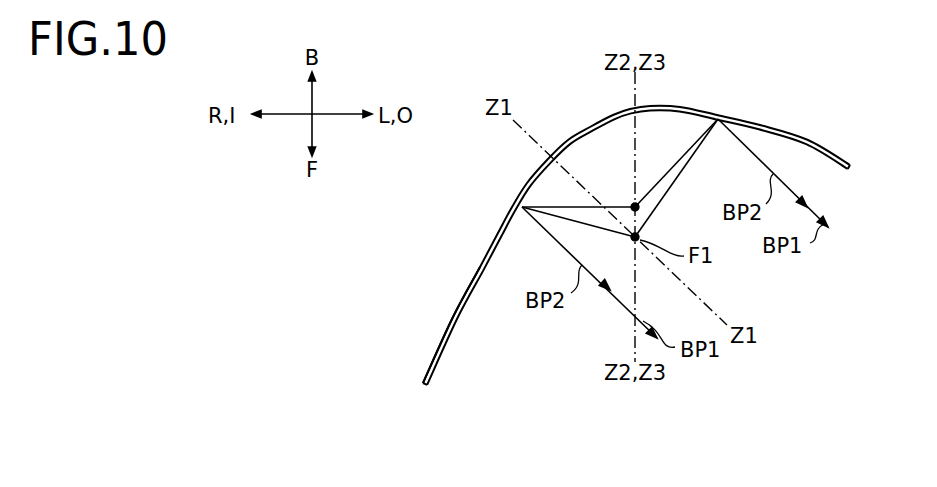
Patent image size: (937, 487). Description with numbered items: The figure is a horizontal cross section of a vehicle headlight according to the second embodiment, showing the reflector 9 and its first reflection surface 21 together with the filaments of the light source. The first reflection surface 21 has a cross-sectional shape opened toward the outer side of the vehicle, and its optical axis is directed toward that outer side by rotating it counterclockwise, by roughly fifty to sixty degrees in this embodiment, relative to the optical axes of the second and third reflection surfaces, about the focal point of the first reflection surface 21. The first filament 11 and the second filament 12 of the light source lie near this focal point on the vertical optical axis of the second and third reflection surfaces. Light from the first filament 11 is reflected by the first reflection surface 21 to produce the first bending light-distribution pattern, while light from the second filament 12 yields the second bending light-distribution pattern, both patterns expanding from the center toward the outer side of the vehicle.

The reflector 9 is at (808, 141).
The first filament 11 is at (641, 237).
The second filament 12 is at (632, 206).
The first reflection surface 21 is at (461, 318).